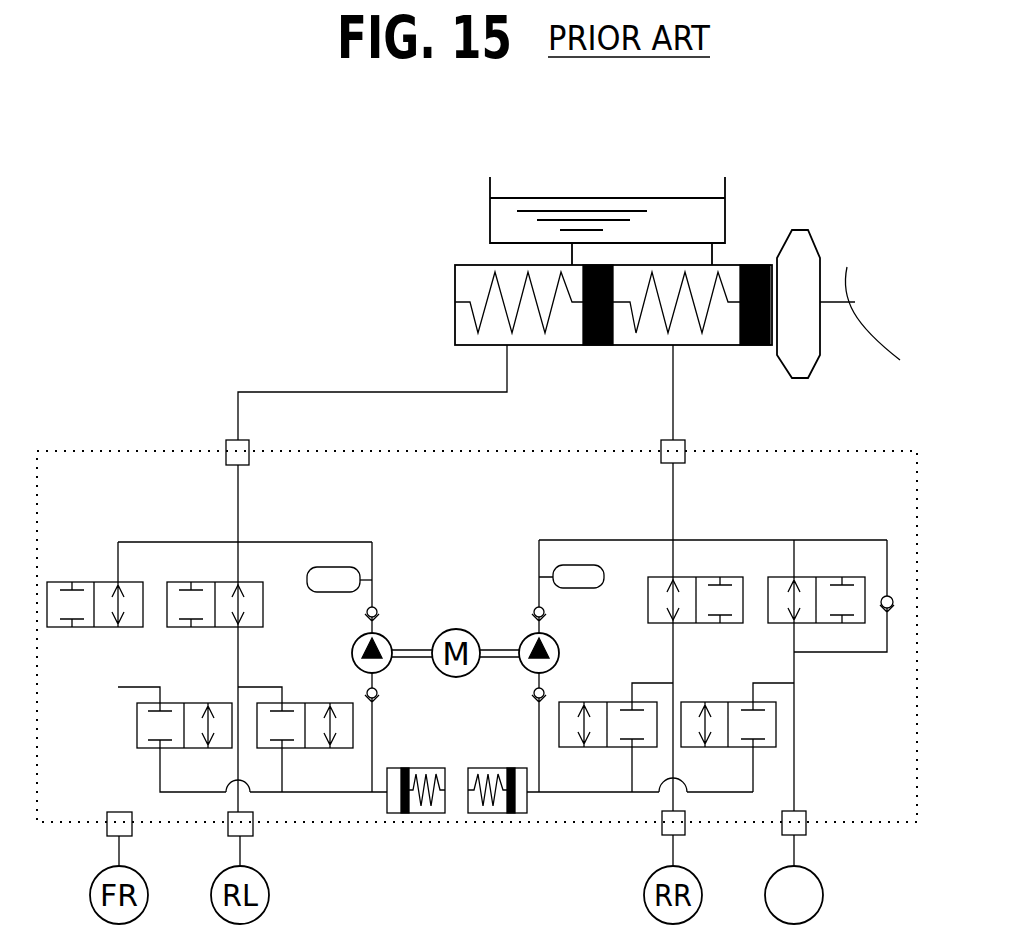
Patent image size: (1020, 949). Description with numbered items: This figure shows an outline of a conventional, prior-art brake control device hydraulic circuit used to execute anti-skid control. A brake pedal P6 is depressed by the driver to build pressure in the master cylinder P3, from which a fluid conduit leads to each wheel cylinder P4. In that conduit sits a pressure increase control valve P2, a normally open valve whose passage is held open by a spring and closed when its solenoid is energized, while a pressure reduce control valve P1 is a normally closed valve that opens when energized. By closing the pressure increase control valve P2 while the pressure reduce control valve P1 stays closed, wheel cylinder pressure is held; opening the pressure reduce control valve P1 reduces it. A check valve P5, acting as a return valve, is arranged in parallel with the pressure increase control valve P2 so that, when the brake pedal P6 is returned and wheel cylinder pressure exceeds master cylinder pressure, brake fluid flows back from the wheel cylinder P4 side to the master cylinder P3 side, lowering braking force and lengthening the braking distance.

The pressure reduce control valve P1 is at (690, 697).
The pressure increase control valve P2 is at (802, 577).
The master cylinder P3 is at (716, 347).
The wheel cylinder P4 is at (813, 870).
The check valve P5 is at (893, 595).
The brake pedal P6 is at (878, 315).